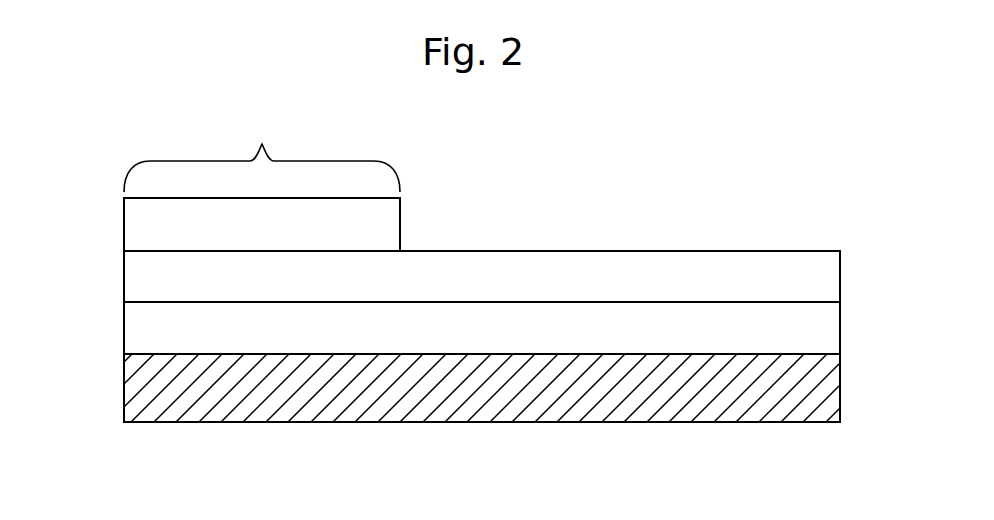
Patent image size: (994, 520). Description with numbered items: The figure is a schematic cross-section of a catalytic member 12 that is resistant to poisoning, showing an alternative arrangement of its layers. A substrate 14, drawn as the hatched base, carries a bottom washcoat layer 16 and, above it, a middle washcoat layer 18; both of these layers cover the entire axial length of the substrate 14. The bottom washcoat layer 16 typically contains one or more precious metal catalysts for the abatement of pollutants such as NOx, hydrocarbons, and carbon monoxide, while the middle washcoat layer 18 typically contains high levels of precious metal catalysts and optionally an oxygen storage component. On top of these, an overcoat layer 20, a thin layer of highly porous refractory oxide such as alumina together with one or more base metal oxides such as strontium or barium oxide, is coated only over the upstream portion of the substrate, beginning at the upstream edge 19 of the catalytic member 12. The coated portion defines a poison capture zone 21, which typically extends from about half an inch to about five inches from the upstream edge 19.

The catalytic member 12 is at (116, 160).
The substrate 14 is at (743, 400).
The bottom washcoat layer 16 is at (827, 330).
The middle washcoat layer 18 is at (827, 278).
The upstream edge 19 is at (118, 292).
The overcoat layer 20 is at (387, 226).
The poison capture zone 21 is at (262, 154).